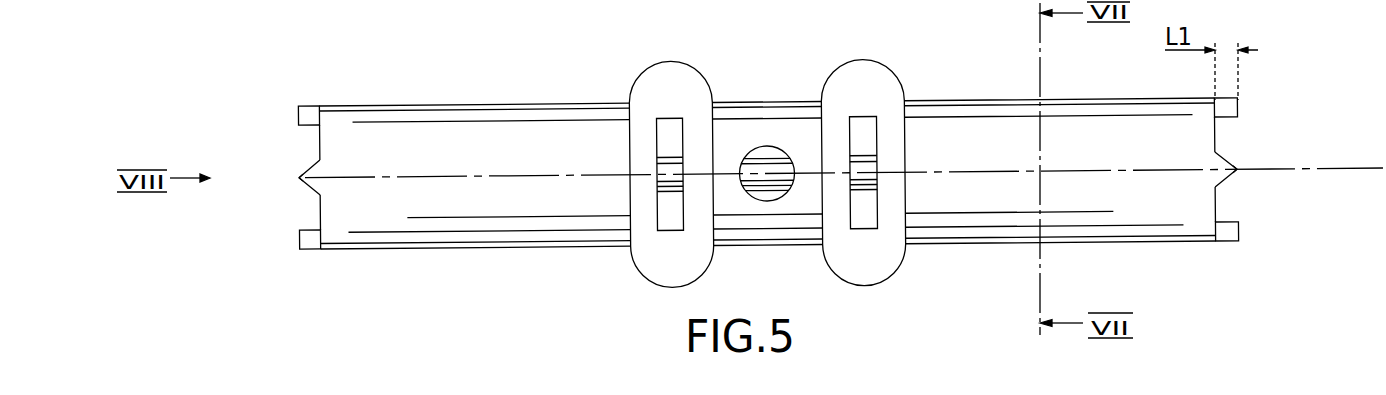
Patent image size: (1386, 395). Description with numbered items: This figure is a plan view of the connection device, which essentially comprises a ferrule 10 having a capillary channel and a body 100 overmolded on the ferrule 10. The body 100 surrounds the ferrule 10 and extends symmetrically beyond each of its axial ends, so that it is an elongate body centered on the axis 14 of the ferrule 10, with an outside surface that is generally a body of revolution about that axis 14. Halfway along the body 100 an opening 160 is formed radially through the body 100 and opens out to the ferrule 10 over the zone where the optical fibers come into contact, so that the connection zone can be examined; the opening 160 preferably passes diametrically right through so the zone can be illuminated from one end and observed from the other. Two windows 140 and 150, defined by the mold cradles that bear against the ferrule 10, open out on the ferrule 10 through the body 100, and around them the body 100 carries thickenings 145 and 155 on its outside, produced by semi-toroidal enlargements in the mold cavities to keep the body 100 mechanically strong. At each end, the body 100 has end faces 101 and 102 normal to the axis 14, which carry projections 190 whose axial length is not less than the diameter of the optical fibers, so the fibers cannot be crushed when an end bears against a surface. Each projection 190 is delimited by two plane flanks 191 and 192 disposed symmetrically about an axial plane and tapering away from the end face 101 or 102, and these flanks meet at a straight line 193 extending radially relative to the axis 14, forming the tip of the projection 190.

The ferrule 10 is at (657, 183).
The axis 14 is at (1361, 168).
The body 100 is at (427, 127).
The end face 101 is at (1220, 142).
The end face 102 is at (318, 140).
The window 140 is at (867, 125).
The thickening 145 is at (898, 83).
The window 150 is at (673, 125).
The thickening 155 is at (637, 80).
The opening 160 is at (773, 152).
The projection 190 is at (310, 115).
The plane flank 191 is at (310, 168).
The plane flank 192 is at (310, 192).
The straight line 193 is at (300, 178).